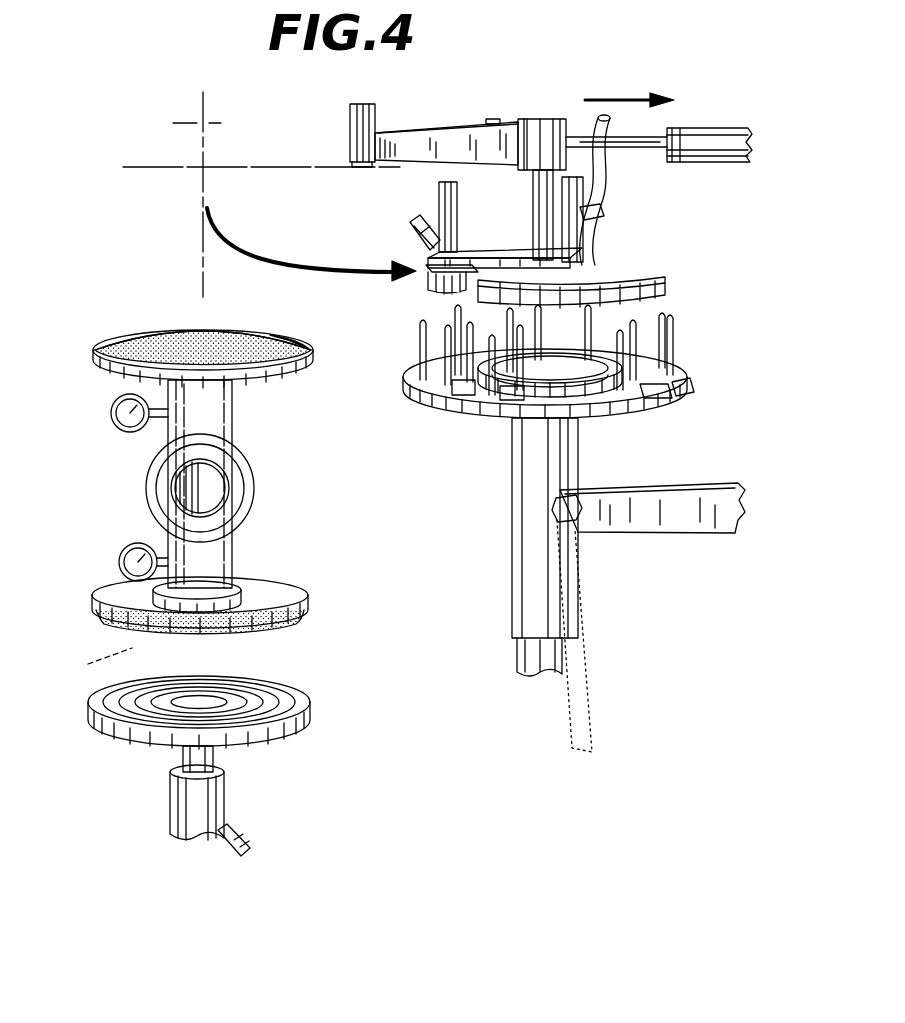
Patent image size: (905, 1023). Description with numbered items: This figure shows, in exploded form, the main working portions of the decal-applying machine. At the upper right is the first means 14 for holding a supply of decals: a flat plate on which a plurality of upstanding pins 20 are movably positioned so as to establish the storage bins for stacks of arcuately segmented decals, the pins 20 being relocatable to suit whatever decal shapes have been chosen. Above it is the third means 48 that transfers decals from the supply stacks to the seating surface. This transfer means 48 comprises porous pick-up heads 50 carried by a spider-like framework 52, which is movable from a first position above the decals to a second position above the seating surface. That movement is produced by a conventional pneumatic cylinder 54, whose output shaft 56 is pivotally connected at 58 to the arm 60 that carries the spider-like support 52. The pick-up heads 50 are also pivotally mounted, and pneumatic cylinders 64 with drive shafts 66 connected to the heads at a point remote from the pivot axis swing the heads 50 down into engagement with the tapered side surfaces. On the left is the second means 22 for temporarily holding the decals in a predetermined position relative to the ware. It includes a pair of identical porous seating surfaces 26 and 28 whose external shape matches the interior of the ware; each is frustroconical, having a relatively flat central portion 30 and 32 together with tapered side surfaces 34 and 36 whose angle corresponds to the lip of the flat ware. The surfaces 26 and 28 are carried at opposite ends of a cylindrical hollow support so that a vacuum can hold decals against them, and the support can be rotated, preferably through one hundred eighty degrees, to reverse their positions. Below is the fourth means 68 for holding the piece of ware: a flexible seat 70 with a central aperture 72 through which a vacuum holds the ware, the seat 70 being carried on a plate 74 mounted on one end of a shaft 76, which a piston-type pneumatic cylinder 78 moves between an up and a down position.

The first means for holding a supply of decals 14 is at (684, 340).
The upstanding pins 20 is at (248, 328).
The second means for temporarily holding decals 22 is at (290, 505).
The porous seating surface 26 is at (168, 322).
The porous seating surface 28 is at (252, 645).
The flat central portion 30 is at (214, 324).
The flat central portion 32 is at (93, 661).
The tapered side surface 34 is at (312, 355).
The tapered side surface 36 is at (300, 633).
The third means for transferring decals 48 is at (543, 70).
The porous pick-up head 50 is at (430, 294).
The spider-like framework 52 is at (505, 236).
The pneumatic cylinder 54 is at (686, 158).
The output shaft 56 is at (655, 135).
The pivotal connection 58 is at (497, 120).
The arm 60 is at (476, 128).
The pneumatic cylinders 64 is at (598, 214).
The drive shafts 66 is at (407, 242).
The fourth means for holding the ware 68 is at (325, 748).
The flexible seat 70 is at (92, 700).
The aperture 72 is at (188, 705).
The plate 74 is at (268, 740).
The shaft 76 is at (170, 752).
The pneumatic cylinder 78 is at (208, 835).